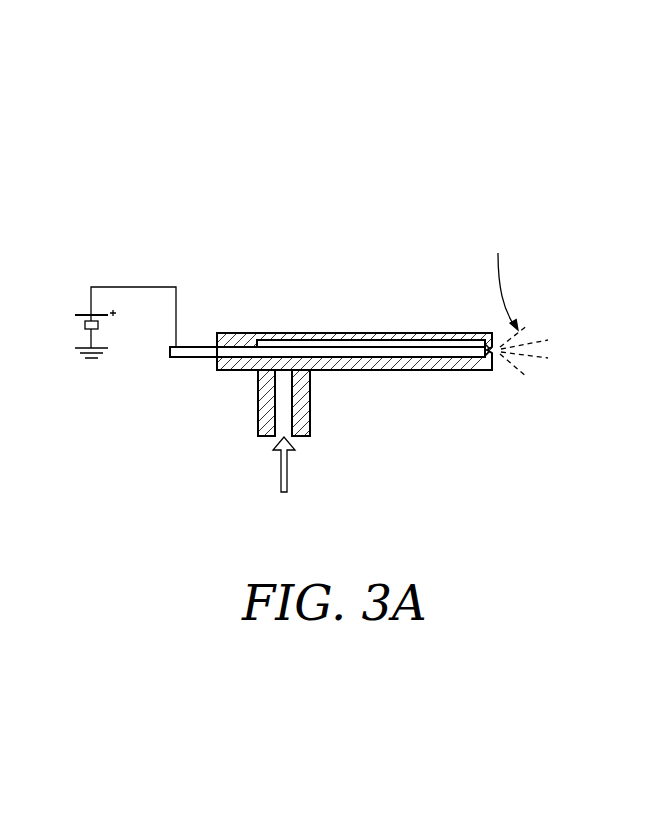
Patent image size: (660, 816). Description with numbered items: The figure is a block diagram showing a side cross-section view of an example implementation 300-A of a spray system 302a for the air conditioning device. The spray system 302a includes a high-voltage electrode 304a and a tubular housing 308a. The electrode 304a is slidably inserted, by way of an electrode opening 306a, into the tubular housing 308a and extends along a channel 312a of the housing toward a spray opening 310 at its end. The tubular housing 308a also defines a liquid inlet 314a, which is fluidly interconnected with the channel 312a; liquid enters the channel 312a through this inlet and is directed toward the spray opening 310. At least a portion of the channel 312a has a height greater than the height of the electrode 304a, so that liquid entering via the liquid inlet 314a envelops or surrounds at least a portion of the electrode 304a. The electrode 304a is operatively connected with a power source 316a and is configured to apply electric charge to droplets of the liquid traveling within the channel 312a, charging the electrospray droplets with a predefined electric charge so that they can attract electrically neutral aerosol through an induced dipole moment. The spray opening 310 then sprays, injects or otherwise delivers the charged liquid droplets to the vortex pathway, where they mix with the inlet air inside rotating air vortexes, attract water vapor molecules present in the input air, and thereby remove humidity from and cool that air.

The electrospray system 300-A is at (416, 137).
The spray system 302a is at (228, 176).
The high-voltage electrode 304a is at (195, 346).
The electrode opening 306a is at (208, 357).
The tubular housing 308a is at (398, 372).
The spray opening 310 is at (498, 358).
The channel 312a is at (332, 345).
The liquid inlet 314a is at (280, 404).
The power source 316a is at (83, 314).